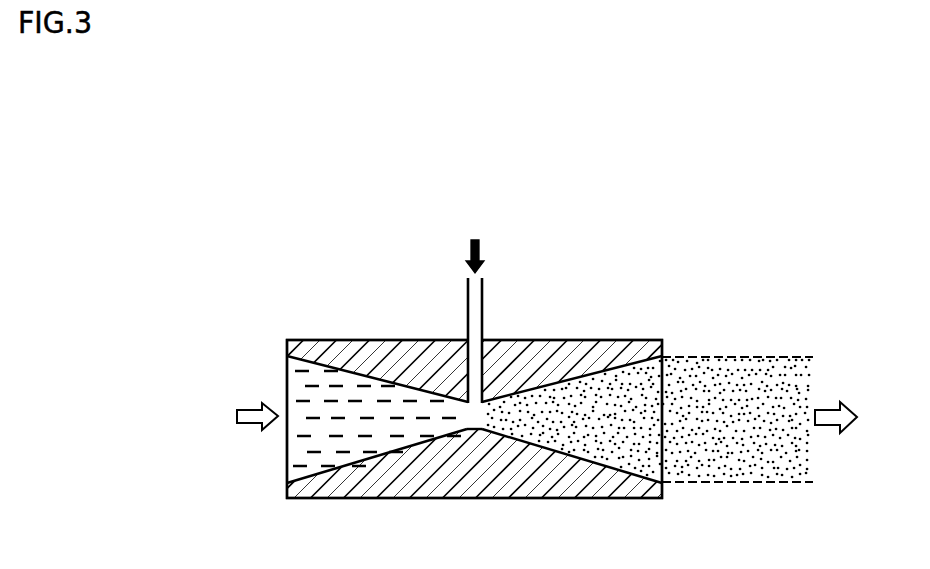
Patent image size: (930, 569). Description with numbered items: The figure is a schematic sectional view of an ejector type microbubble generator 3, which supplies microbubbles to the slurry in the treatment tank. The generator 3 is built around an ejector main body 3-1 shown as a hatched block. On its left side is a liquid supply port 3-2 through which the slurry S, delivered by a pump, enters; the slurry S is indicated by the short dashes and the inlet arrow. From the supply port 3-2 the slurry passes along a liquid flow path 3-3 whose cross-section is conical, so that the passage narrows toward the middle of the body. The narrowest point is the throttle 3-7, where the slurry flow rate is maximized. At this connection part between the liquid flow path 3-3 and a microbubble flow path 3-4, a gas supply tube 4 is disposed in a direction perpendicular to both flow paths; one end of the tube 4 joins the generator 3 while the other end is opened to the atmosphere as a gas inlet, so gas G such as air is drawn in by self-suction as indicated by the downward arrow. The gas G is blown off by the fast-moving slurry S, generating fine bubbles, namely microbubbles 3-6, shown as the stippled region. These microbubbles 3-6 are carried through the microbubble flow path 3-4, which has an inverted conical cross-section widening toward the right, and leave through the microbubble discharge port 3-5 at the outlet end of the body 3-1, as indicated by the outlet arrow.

The microbubble generator 3 is at (311, 307).
The ejector main body 3-1 is at (540, 341).
The liquid supply port 3-2 is at (295, 449).
The liquid flow path 3-3 is at (318, 358).
The microbubble flow path 3-4 is at (646, 386).
The microbubble discharge port 3-5 is at (663, 453).
The microbubbles 3-6 is at (756, 378).
The throttle 3-7 is at (475, 430).
The gas supply tube 4 is at (468, 305).
The gas G is at (481, 253).
The slurry S is at (297, 428).